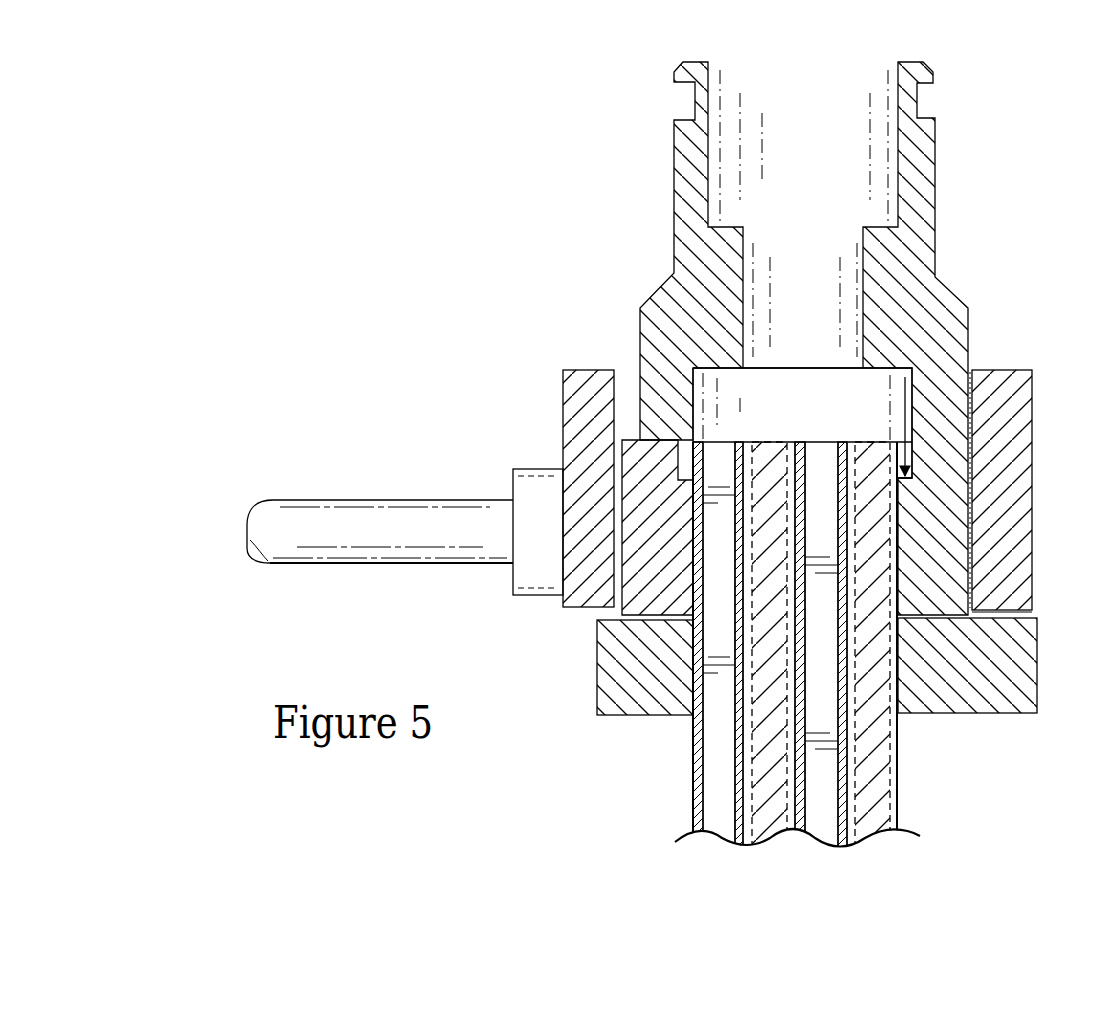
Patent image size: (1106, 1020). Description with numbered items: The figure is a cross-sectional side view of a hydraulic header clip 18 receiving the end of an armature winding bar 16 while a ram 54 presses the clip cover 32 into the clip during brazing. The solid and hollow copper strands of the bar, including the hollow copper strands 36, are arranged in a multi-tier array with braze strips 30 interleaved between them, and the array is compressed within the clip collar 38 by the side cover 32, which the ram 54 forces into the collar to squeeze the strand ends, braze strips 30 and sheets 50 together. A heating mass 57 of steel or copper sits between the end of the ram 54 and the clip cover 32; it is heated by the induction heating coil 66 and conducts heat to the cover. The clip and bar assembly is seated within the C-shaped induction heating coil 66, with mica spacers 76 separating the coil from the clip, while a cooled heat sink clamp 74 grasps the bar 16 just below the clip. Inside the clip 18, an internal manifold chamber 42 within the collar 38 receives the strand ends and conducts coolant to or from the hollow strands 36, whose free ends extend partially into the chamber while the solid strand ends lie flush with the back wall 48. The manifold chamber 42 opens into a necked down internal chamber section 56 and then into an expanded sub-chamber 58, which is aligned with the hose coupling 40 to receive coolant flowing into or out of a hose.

The armature winding bar 16 is at (804, 852).
The hydraulic header clip 18 is at (953, 297).
The braze strips 30 is at (803, 535).
The clip cover 32 is at (622, 609).
The hollow copper strands 36 is at (823, 445).
The clip collar 38 is at (947, 388).
The hose coupling 40 is at (927, 147).
The manifold chamber 42 is at (658, 297).
The back wall 48 is at (905, 448).
The sheets 50 is at (684, 612).
The ram 54 is at (292, 573).
The necked down internal chamber section 56 is at (796, 302).
The heating mass 57 is at (595, 370).
The expanded sub-chamber 58 is at (800, 137).
The induction heating coil 66 is at (1018, 545).
The cooled heat sink clamp 74 is at (633, 716).
The mica spacers 76 is at (977, 613).